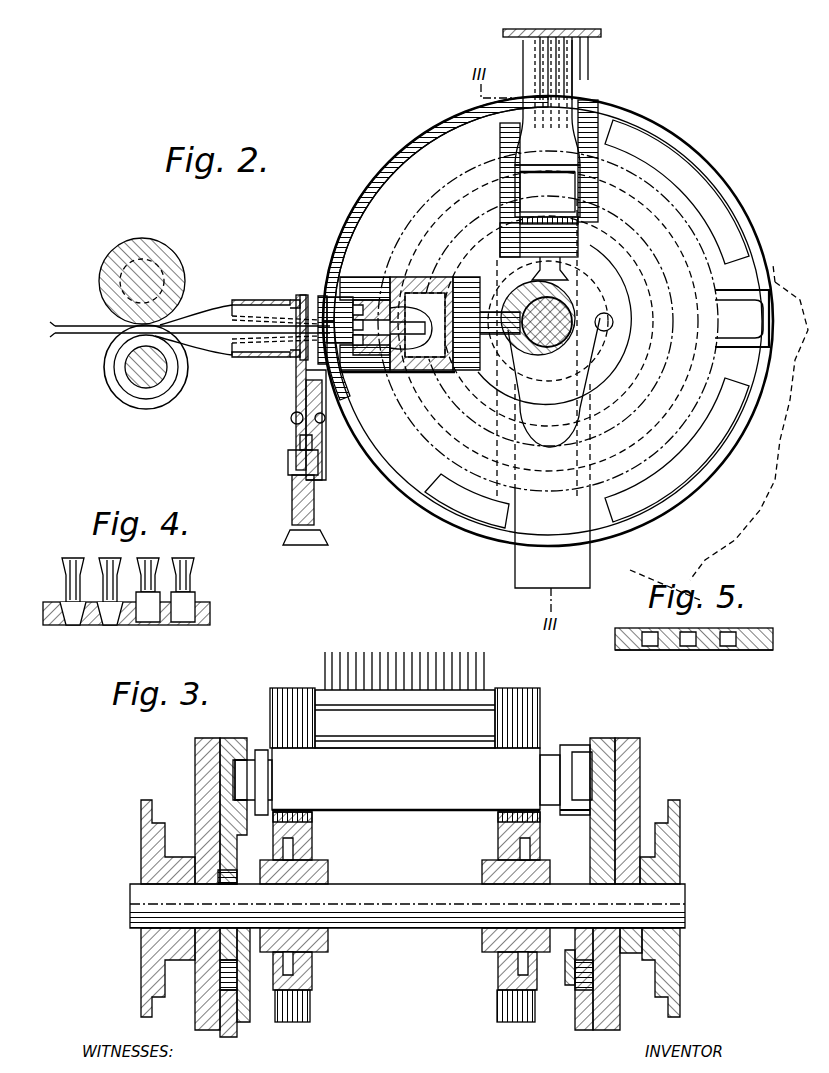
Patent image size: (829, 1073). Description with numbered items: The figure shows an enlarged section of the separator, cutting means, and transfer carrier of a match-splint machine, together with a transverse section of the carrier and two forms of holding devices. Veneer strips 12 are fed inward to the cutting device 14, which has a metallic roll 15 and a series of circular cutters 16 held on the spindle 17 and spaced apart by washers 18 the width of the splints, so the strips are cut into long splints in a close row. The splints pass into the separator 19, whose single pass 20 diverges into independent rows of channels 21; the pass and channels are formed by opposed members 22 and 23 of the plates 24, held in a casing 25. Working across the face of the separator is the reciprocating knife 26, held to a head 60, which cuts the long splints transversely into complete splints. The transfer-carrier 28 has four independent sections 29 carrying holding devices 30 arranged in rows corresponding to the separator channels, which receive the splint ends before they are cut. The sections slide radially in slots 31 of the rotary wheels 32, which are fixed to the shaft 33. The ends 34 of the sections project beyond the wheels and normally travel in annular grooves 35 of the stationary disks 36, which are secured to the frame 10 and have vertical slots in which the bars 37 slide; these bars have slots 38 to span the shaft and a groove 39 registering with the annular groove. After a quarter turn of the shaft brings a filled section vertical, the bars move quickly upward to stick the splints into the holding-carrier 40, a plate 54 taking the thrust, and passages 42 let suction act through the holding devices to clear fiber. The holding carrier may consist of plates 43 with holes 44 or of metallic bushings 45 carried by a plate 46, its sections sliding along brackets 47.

In FIG. 3, the frame 10 is at (142, 820).
In FIG. 2, the veneer strips 12 is at (186, 315).
In FIG. 2, the cutting device 14 is at (123, 281).
In FIG. 2, the metallic roll 15 is at (175, 262).
In FIG. 2, the circular cutters 16 is at (180, 392).
In FIG. 2, the spindle 17 is at (153, 382).
In FIG. 2, the washers 18 is at (122, 380).
In FIG. 2, the separator 19 is at (275, 306).
In FIG. 2, the single pass 20 is at (165, 322).
In FIG. 2, the channels 21 is at (223, 340).
In FIG. 2, the opposed member 22 is at (270, 300).
In FIG. 2, the opposed member 23 is at (262, 355).
In FIG. 2, the plates 24 is at (225, 300).
In FIG. 2, the casing 25 is at (307, 316).
In FIG. 2, the reciprocating knife 26 is at (296, 380).
In FIG. 2, the transfer-carrier 28 is at (548, 321).
In FIG. 2, the sections 29 is at (740, 322).
In FIG. 3, the sections 29 is at (432, 798).
In FIG. 2, the holding devices 30 is at (338, 340).
In FIG. 2, the slots 31 is at (390, 372).
In FIG. 3, the slots 31 is at (282, 700).
In FIG. 2, the rotary wheels 32 is at (405, 190).
In FIG. 3, the rotary wheels 32 is at (322, 866).
In FIG. 2, the shaft 33 is at (548, 345).
In FIG. 3, the shaft 33 is at (140, 908).
In FIG. 2, the ends of the sections 34 is at (585, 210).
In FIG. 3, the ends of the sections 34 is at (248, 780).
In FIG. 3, the annular grooves 35 is at (575, 768).
In FIG. 2, the stationary disks 36 is at (642, 437).
In FIG. 3, the stationary disks 36 is at (198, 782).
In FIG. 2, the bars 37 is at (520, 570).
In FIG. 3, the slots 38 is at (226, 968).
In FIG. 3, the groove 39 is at (240, 770).
In FIG. 2, the holding-carrier 40 is at (602, 34).
In FIG. 5, the holding-carrier 40 is at (694, 624).
In FIG. 2, the passages 42 is at (440, 322).
In FIG. 5, the plates 43 is at (768, 652).
In FIG. 5, the holes 44 is at (690, 650).
In FIG. 4, the metallic bushings 45 is at (64, 576).
In FIG. 4, the plate 46 is at (208, 610).
In FIG. 2, the brackets 47 is at (750, 485).
In FIG. 2, the plate 54 is at (512, 33).
In FIG. 2, the head 60 is at (310, 440).